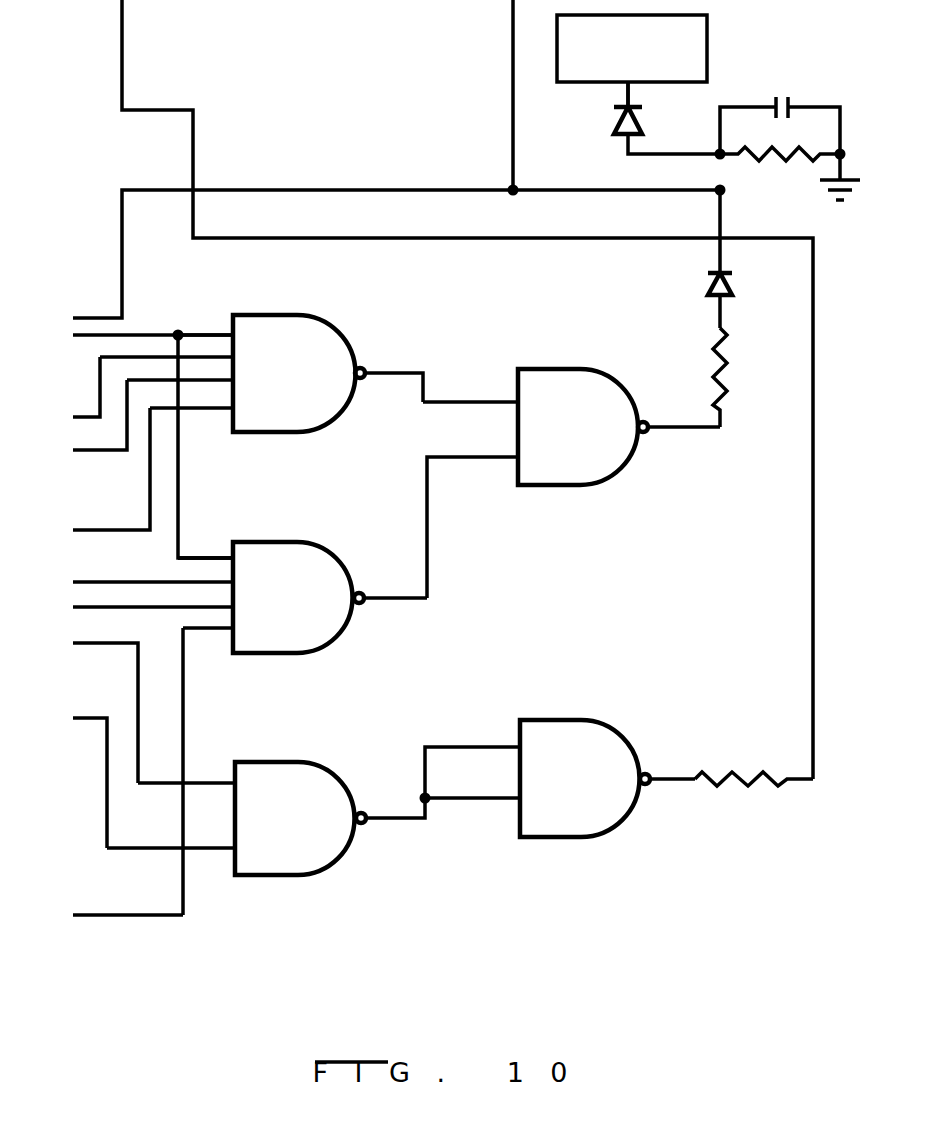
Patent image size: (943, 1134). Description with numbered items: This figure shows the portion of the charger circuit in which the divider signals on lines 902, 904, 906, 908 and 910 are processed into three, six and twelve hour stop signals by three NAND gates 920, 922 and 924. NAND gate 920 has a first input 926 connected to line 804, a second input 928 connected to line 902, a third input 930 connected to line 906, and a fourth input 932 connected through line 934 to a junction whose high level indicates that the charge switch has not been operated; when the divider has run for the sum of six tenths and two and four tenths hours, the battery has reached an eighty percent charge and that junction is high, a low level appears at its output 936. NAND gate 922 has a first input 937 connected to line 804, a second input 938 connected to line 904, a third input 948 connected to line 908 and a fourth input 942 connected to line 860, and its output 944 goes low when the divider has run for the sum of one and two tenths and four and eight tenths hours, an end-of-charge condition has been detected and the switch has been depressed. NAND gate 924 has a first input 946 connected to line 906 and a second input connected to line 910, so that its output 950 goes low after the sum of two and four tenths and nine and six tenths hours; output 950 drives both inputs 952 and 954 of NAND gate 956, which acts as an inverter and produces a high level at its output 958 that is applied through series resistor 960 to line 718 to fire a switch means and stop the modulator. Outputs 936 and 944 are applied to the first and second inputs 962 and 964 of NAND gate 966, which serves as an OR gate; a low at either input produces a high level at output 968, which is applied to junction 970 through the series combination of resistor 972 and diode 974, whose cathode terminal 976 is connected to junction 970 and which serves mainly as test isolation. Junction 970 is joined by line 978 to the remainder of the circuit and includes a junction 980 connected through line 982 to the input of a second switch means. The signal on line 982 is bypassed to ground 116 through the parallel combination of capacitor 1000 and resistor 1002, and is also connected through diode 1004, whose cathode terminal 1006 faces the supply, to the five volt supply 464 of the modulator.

The line 718 is at (122, 52).
The line 978 is at (293, 190).
The line 982 is at (513, 45).
The junction 980 is at (511, 185).
The 5 volt supply 464 is at (707, 50).
The cathode terminal 1006 is at (621, 92).
The diode 1004 is at (622, 128).
The capacitor 1000 is at (775, 100).
The resistor 1002 is at (790, 152).
The junction 970 is at (724, 190).
The ground 116 is at (840, 205).
The cathode terminal 976 is at (720, 255).
The diode 974 is at (732, 288).
The resistor 972 is at (728, 360).
The output 968 is at (662, 427).
The NAND gate 966 is at (550, 369).
The first input 962 is at (462, 402).
The second input 964 is at (480, 457).
The output 936 is at (390, 373).
The NAND gate 920 is at (330, 320).
The NAND gate 922 is at (333, 545).
The NAND gate 924 is at (320, 762).
The NAND gate 956 is at (585, 720).
The line 804 is at (128, 335).
The first input 926 is at (213, 335).
The second input 928 is at (196, 357).
The line 902 is at (100, 395).
The third input 930 is at (215, 383).
The line 906 is at (133, 450).
The fourth input 932 is at (200, 410).
The line 934 is at (125, 530).
The second input 938 is at (183, 580).
The first input 937 is at (225, 558).
The line 904 is at (93, 582).
The line 908 is at (98, 607).
The output 944 is at (375, 598).
The input 948 is at (225, 620).
The fourth input 942 is at (200, 635).
The line 860 is at (130, 915).
The line 910 is at (95, 718).
The first input 946 is at (210, 783).
The output 950 is at (375, 822).
The input 952 is at (470, 747).
The input 954 is at (468, 800).
The output 958 is at (665, 779).
The resistor 960 is at (740, 775).